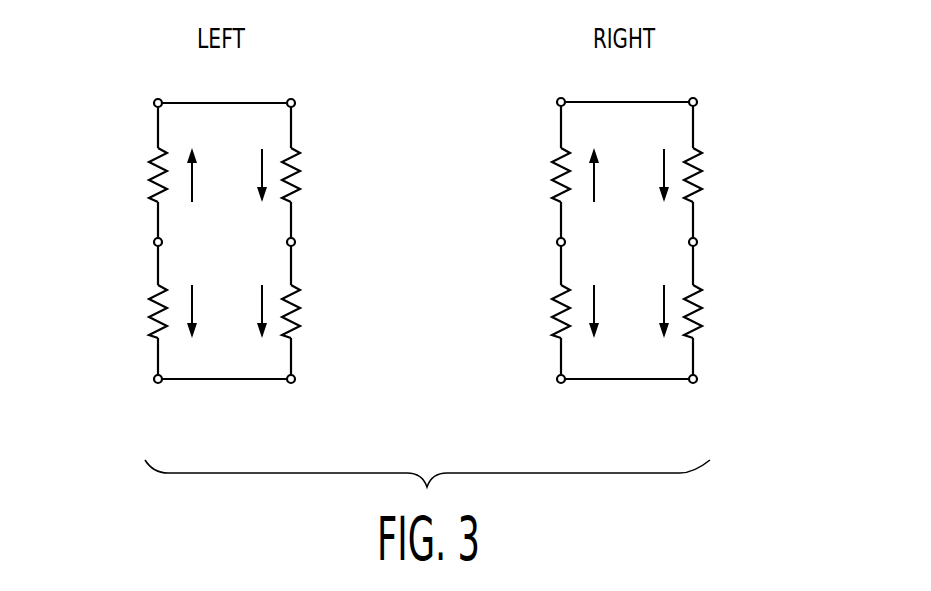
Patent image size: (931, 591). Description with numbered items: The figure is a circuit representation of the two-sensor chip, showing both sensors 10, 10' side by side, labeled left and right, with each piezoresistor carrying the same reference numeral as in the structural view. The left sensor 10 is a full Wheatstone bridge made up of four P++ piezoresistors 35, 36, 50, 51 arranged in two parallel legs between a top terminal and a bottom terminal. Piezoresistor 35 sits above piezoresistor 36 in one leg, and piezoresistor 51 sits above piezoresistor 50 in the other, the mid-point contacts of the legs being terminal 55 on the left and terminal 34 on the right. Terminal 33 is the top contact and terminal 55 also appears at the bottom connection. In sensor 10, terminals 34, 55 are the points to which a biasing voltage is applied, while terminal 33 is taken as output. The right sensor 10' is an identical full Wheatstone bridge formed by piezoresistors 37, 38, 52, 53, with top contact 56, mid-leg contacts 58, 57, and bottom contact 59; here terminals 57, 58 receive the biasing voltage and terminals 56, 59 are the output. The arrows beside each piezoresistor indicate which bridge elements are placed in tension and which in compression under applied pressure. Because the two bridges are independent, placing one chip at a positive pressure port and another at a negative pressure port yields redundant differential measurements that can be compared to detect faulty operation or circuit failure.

The sensor 10 is at (230, 248).
The sensor 10' is at (626, 248).
The P++ contact 33 is at (267, 91).
The P++ contact 34 is at (295, 242).
The P++ piezoresistor 35 is at (148, 188).
The P++ piezoresistor 36 is at (150, 308).
The P++ piezoresistor 37 is at (553, 175).
The P++ piezoresistor 38 is at (553, 308).
The P++ piezoresistor 50 is at (302, 315).
The P++ piezoresistor 51 is at (302, 183).
The P++ piezoresistor 52 is at (703, 172).
The P++ piezoresistor 53 is at (707, 315).
The P++ contact 55 is at (153, 242).
The P++ contact 56 is at (669, 91).
The P++ contact 57 is at (698, 242).
The P++ contact 58 is at (557, 242).
The P++ contact 59 is at (648, 388).